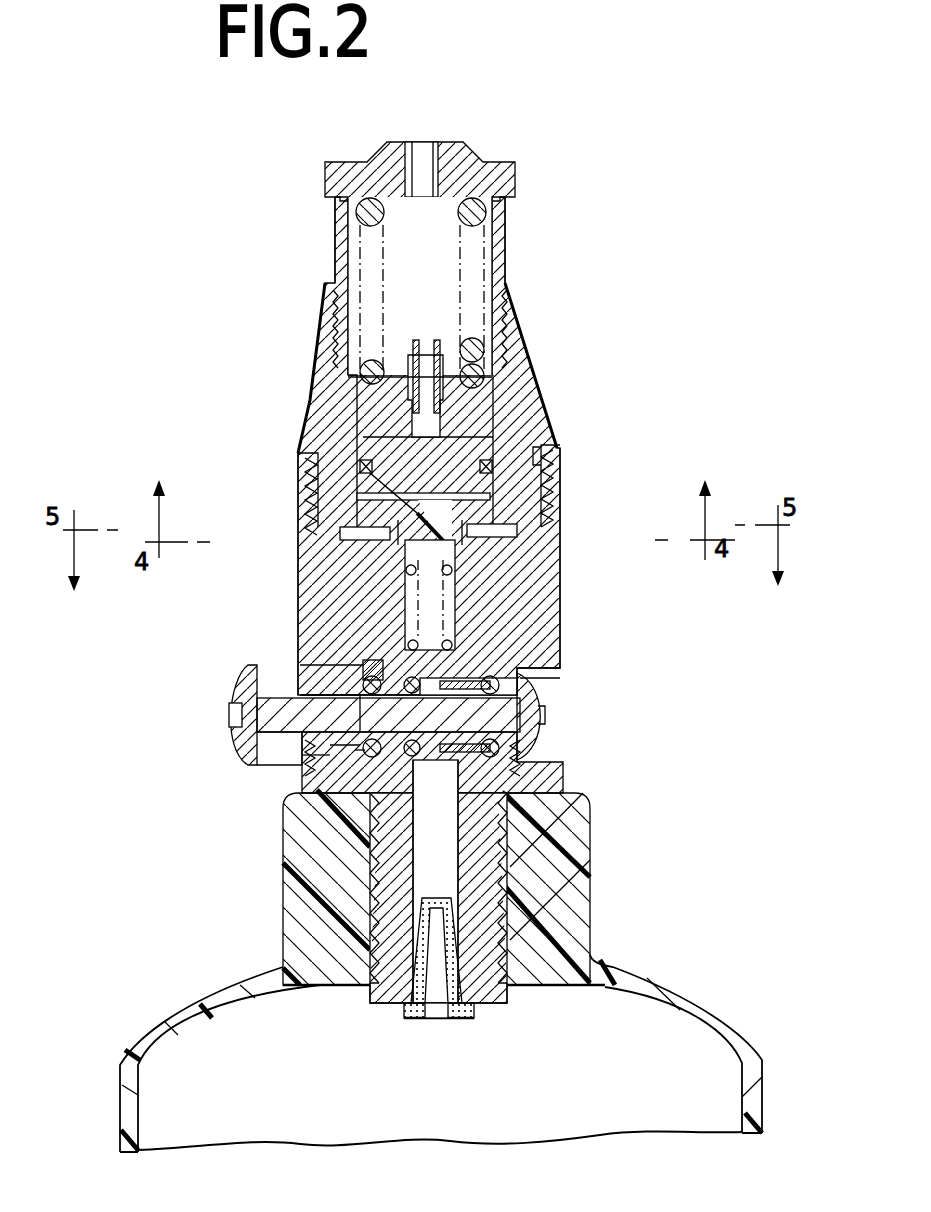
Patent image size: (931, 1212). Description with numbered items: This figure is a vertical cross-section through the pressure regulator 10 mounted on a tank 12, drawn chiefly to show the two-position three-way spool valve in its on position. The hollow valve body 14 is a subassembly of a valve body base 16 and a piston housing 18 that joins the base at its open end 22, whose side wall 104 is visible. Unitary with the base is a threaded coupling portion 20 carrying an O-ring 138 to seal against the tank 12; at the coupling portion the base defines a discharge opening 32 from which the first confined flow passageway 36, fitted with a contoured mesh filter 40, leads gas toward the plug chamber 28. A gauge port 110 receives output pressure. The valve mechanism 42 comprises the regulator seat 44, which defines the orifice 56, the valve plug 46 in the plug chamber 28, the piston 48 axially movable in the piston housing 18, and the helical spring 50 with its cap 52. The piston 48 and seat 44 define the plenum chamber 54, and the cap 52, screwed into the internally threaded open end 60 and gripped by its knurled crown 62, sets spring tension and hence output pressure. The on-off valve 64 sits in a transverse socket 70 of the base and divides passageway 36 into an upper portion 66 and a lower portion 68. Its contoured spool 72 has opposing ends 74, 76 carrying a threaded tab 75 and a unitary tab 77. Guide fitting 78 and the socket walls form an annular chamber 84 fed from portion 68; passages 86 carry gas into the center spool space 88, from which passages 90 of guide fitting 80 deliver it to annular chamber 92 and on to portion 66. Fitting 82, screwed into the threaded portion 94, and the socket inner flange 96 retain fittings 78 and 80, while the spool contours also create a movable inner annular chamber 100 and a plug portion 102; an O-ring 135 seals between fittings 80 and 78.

The pressure regulator 10 is at (300, 288).
The tank 12 is at (762, 1065).
The valve body 14 is at (566, 445).
The valve body base 16 is at (318, 550).
The piston housing 18 is at (513, 403).
The coupling portion 20 is at (496, 1000).
The open end 22 is at (312, 495).
The plug chamber 28 is at (448, 585).
The discharge opening 32 is at (422, 1018).
The first confined flow passageway 36 is at (385, 640).
The contoured mesh filter 40 is at (460, 1018).
The valve mechanism 42 is at (503, 468).
The regulator seat 44 is at (352, 485).
The valve plug 46 is at (540, 483).
The piston 48 is at (473, 427).
The spring 50 is at (478, 245).
The cap 52 is at (452, 172).
The plenum chamber 54 is at (345, 532).
The orifice 56 is at (362, 460).
The internally threaded open end 60 is at (510, 280).
The crown 62 is at (454, 138).
The on-off valve 64 is at (283, 750).
The upper portion 66 is at (395, 660).
The lower portion 68 is at (505, 885).
The transverse socket 70 is at (350, 745).
The spool 72 is at (280, 702).
The end 74 is at (240, 742).
The tab 75 is at (545, 735).
The end 76 is at (540, 715).
The tab 77 is at (235, 730).
The guide fitting 78 is at (500, 748).
The guide fitting 80 is at (435, 672).
The fitting 82 is at (300, 755).
The annular chamber 84 is at (592, 822).
The passages 86 is at (470, 690).
The center spool space 88 is at (455, 640).
The passages 90 is at (380, 665).
The annular chamber 92 is at (444, 887).
The threaded portion 94 is at (315, 670).
The socket inner flange 96 is at (540, 690).
The inner annular chamber 100 is at (330, 690).
The movable plug portion 102 is at (355, 750).
The side wall 104 is at (548, 465).
The gauge port 110 is at (365, 560).
The O-ring 135 is at (428, 765).
The O-ring 138 is at (435, 881).